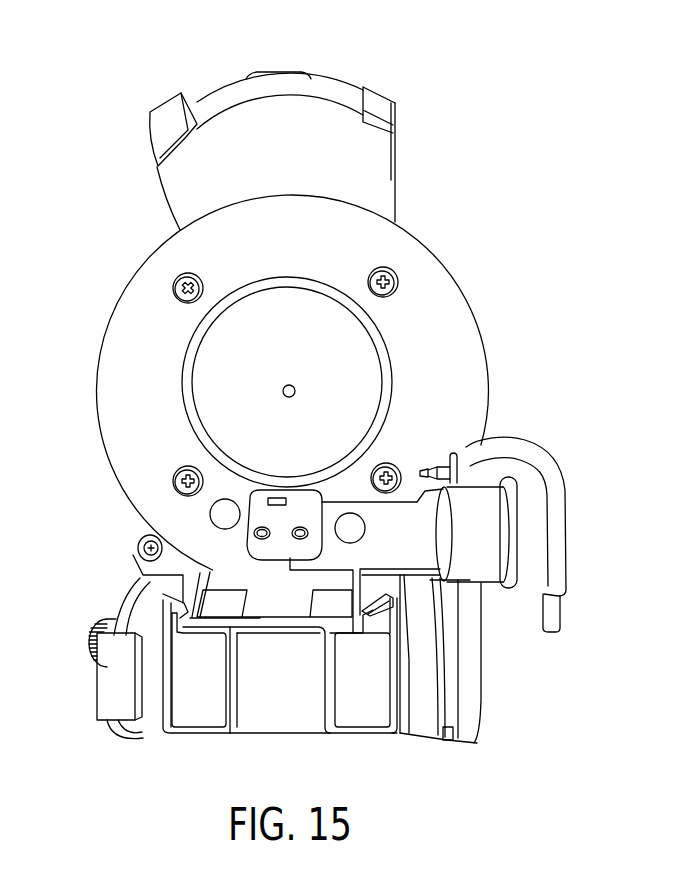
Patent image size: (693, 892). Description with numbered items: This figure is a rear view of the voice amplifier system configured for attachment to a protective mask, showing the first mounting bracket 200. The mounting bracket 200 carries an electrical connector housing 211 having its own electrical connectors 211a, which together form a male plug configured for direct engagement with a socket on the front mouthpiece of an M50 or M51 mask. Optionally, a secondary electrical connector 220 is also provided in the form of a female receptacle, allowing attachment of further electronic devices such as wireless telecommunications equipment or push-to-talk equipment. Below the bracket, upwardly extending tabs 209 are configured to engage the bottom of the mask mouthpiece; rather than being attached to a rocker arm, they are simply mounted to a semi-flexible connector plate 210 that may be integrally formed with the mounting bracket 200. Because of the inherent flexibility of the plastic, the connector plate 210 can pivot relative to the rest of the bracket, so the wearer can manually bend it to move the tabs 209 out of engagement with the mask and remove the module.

The first mounting bracket 200 is at (420, 270).
The upwardly extending tabs 209 is at (170, 606).
The semi-flexible connector plate 210 is at (312, 717).
The electrical connector housing 211 is at (250, 513).
The electrical connectors 211a is at (260, 527).
The secondary electrical connector 220 is at (480, 567).